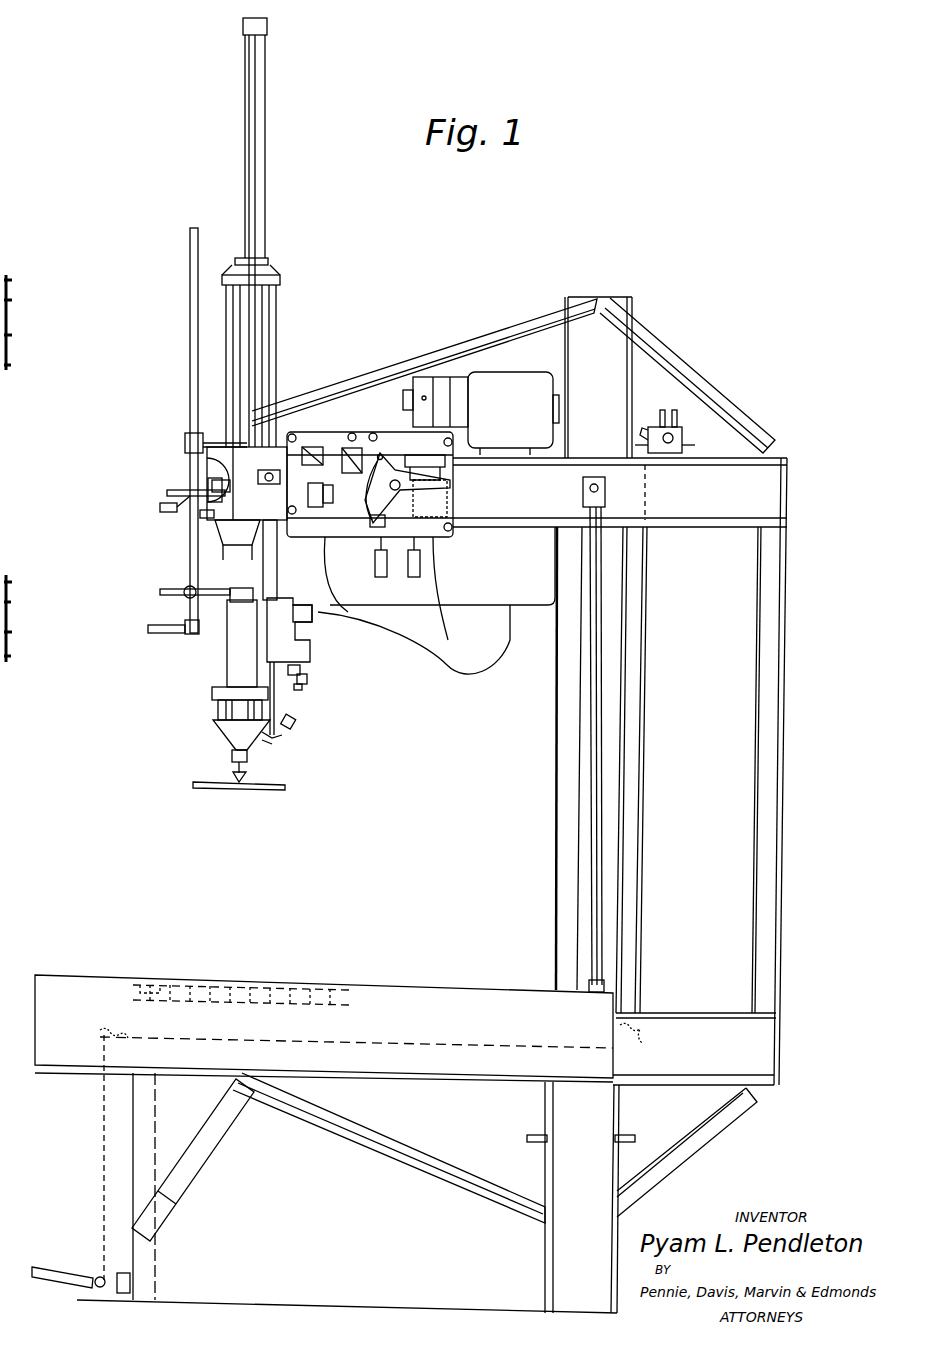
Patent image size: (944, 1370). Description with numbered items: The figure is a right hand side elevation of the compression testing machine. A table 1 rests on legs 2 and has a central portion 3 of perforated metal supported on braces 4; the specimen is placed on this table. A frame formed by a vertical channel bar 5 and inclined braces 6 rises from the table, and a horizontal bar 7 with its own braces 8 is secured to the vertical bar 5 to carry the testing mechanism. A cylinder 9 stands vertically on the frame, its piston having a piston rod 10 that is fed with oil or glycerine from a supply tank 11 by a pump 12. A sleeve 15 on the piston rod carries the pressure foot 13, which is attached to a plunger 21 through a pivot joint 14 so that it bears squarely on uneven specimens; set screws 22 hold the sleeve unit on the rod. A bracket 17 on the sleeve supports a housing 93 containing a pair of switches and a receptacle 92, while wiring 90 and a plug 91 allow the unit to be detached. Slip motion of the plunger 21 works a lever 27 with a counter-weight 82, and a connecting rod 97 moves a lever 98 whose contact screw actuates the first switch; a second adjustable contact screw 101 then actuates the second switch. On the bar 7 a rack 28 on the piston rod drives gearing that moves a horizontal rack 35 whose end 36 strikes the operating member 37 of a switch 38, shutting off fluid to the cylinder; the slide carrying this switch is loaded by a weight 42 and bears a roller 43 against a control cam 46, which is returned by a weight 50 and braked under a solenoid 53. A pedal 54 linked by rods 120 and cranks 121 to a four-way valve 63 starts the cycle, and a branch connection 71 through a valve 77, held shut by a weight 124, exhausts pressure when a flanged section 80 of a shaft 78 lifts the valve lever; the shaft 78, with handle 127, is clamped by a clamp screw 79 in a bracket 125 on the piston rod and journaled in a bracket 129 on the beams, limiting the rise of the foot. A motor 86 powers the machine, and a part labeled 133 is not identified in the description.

The table 1 is at (441, 985).
The legs 2 is at (156, 1140).
The central portion 3 is at (268, 985).
The braces 4 is at (168, 983).
The vertical channel bar 5 is at (557, 795).
The inclined braces 6 is at (594, 840).
The horizontal bar 7 is at (705, 520).
The braces 8 is at (510, 330).
The cylinder 9 is at (276, 312).
The piston rod 10 is at (263, 220).
The supply tank 11 is at (540, 605).
The pump 12 is at (440, 380).
The pressure foot 13 is at (220, 789).
The pivot joint 14 is at (246, 780).
The sleeve 15 is at (227, 648).
The bracket 17 is at (300, 645).
The plunger 21 is at (232, 767).
The set screws 22 is at (215, 670).
The lever 27 is at (276, 742).
The rack 28 is at (252, 160).
The horizontal rack 35 is at (247, 483).
The end of rack 36 is at (275, 466).
The operating member 37 is at (312, 447).
The switch 38 is at (352, 448).
The weight 42 is at (410, 570).
The roller 43 is at (372, 528).
The control cam 46 is at (380, 452).
The weight 50 is at (375, 565).
The solenoid 53 is at (432, 462).
The pedal 54 is at (72, 1268).
The four-way valve 63 is at (682, 432).
The branch connection 71 is at (212, 530).
The valve 77 is at (208, 484).
The shaft 78 is at (190, 365).
The clamp screw 79 is at (184, 590).
The flanged section 80 is at (200, 515).
The counter-weight 82 is at (295, 728).
The motor 86 is at (513, 413).
The wiring portion 90 is at (475, 668).
The plug 91 is at (308, 622).
The receptacle 92 is at (295, 605).
The housing 93 is at (300, 668).
The connecting rod 97 is at (275, 710).
The lever 98 is at (307, 682).
The second adjustable contact screw 101 is at (302, 690).
The rods 120 is at (640, 872).
The cranks 121 is at (135, 1040).
The weight 124 is at (160, 507).
The bracket 125 is at (170, 594).
The handle 127 is at (165, 633).
The bracket 129 is at (185, 440).
The arm 133 is at (167, 492).